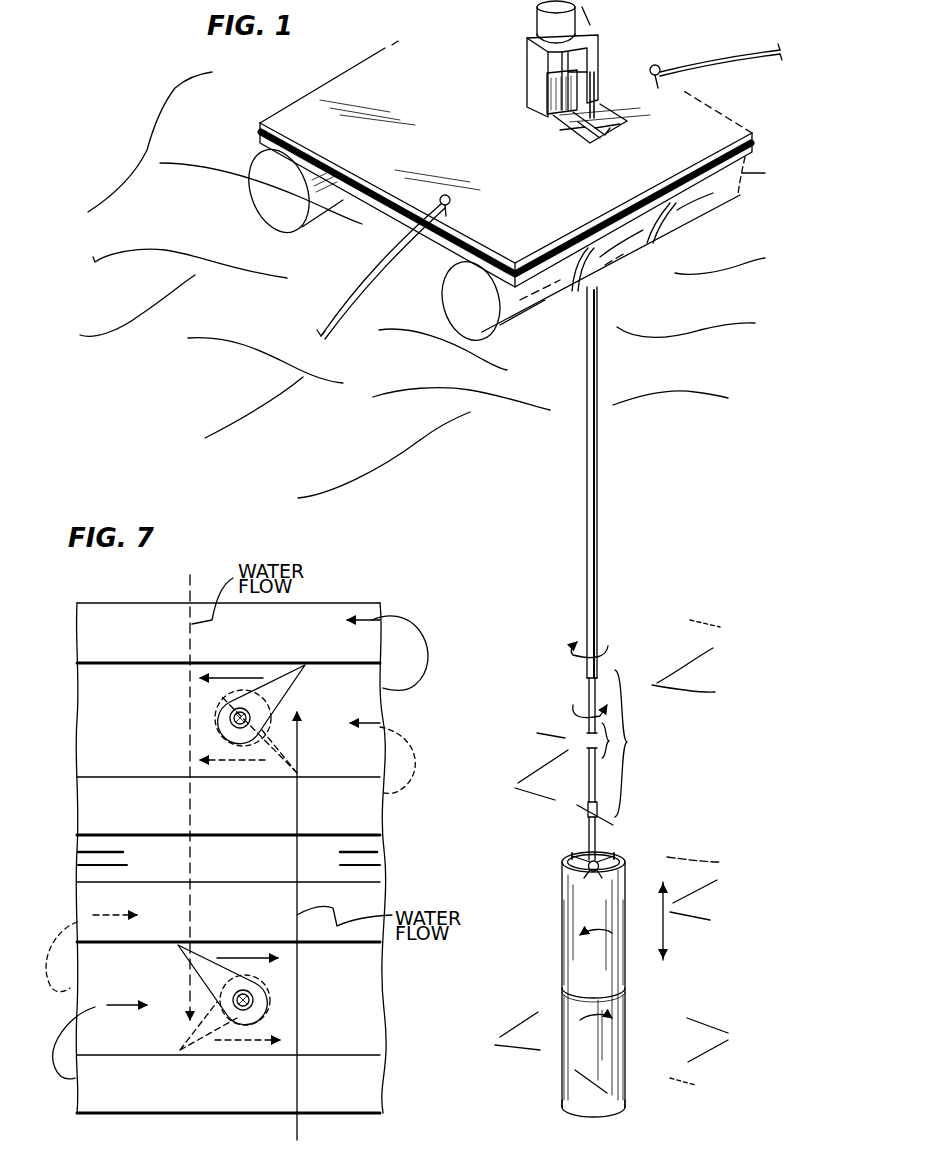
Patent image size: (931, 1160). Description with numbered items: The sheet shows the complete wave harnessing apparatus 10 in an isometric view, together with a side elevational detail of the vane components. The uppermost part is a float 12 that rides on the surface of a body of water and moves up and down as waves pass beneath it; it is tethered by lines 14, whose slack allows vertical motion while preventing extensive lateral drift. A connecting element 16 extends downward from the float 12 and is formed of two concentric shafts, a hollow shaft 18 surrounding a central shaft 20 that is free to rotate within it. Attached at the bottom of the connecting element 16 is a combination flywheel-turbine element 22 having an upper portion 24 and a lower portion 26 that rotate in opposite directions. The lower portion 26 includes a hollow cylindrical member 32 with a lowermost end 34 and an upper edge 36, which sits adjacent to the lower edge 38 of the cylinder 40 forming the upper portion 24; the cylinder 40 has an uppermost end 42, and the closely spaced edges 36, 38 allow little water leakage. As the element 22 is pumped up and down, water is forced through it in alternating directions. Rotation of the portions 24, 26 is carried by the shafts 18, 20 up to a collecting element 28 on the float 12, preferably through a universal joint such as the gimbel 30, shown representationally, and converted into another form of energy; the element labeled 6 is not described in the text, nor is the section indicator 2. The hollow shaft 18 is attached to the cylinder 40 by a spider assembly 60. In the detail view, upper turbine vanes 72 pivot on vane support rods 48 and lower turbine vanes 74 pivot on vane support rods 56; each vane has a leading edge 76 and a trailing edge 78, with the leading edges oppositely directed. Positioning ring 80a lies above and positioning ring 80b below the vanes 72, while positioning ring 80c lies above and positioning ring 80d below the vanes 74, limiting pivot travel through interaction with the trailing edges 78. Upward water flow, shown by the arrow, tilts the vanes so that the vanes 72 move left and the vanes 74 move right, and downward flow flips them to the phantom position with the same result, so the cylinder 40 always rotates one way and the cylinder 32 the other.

In FIG. 1, the wave harnessing apparatus 10 is at (462, 410).
In FIG. 1, the float 12 is at (364, 52).
In FIG. 1, the lines 14 is at (735, 58).
In FIG. 1, the connecting element 16 is at (598, 376).
In FIG. 1, the hollow shaft 18 is at (598, 608).
In FIG. 1, the central shaft 20 is at (593, 695).
In FIG. 1, the flywheel-turbine element 22 is at (676, 850).
In FIG. 1, the upper portion 24 is at (560, 914).
In FIG. 7, the upper portion 24 is at (72, 775).
In FIG. 1, the lower portion 26 is at (560, 1050).
In FIG. 7, the lower portion 26 is at (82, 1090).
In FIG. 1, the collecting element 28 is at (533, 118).
In FIG. 1, the gimbel 30 is at (592, 140).
In FIG. 1, the cylindrical member 32 is at (620, 1027).
In FIG. 7, the cylindrical member 32 is at (368, 1035).
In FIG. 1, the lowermost end 34 is at (575, 1102).
In FIG. 1, the upper edge 36 is at (625, 994).
In FIG. 7, the upper edge 36 is at (380, 870).
In FIG. 1, the lower edge 38 is at (560, 990).
In FIG. 7, the lower edge 38 is at (378, 845).
In FIG. 1, the cylinder 40 is at (566, 948).
In FIG. 1, the uppermost end 42 is at (613, 845).
In FIG. 7, the vane support rods 48 is at (278, 702).
In FIG. 7, the vane support rods 56 is at (262, 996).
In FIG. 1, the spider assembly 60 is at (580, 845).
In FIG. 1, the generator / motor 6 is at (594, 14).
In FIG. 7, the upper turbine vanes 72 is at (278, 680).
In FIG. 7, the lower turbine vanes 74 is at (212, 965).
In FIG. 7, the leading edge 76 is at (226, 727).
In FIG. 7, the trailing edge 78 is at (307, 672).
In FIG. 7, the positioning ring 80a is at (365, 613).
In FIG. 7, the positioning ring 80b is at (368, 792).
In FIG. 7, the positioning ring 80c is at (363, 902).
In FIG. 7, the positioning ring 80d is at (363, 1083).
In FIG. 1, the section line 2 is at (597, 813).